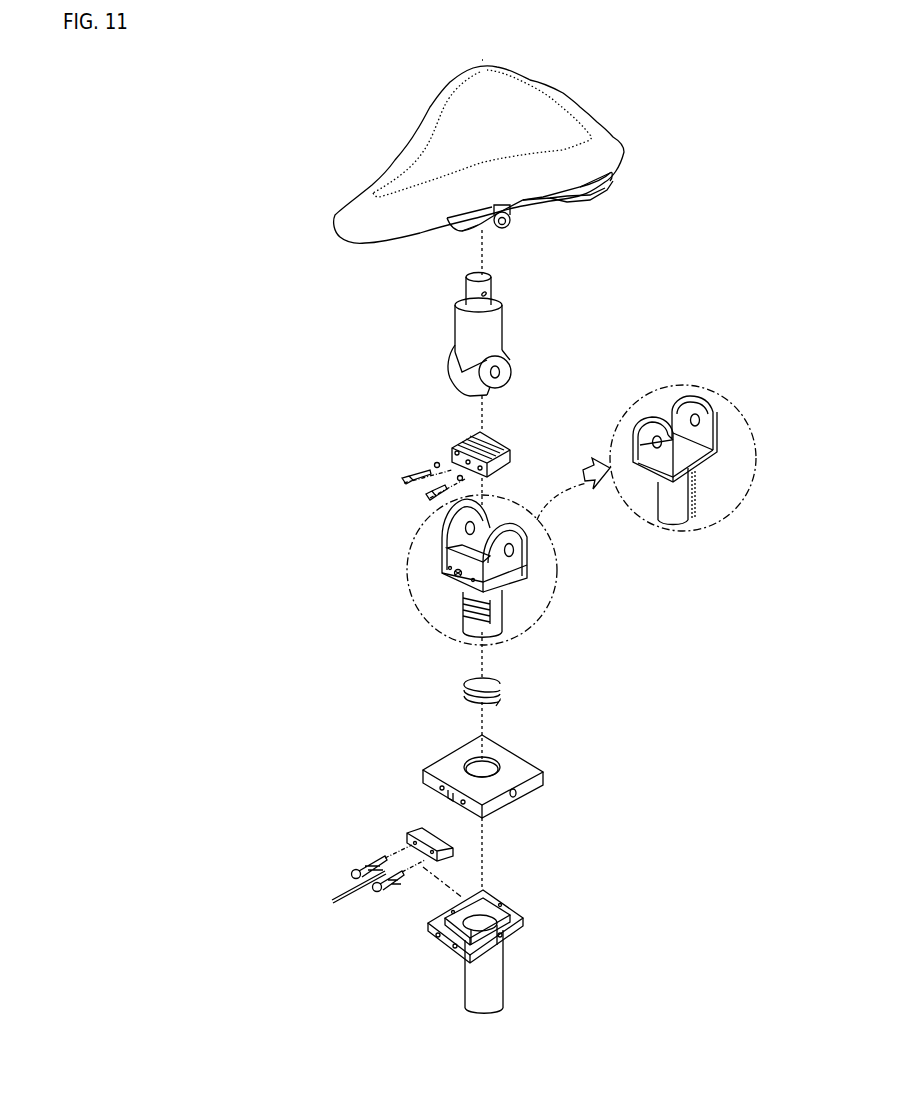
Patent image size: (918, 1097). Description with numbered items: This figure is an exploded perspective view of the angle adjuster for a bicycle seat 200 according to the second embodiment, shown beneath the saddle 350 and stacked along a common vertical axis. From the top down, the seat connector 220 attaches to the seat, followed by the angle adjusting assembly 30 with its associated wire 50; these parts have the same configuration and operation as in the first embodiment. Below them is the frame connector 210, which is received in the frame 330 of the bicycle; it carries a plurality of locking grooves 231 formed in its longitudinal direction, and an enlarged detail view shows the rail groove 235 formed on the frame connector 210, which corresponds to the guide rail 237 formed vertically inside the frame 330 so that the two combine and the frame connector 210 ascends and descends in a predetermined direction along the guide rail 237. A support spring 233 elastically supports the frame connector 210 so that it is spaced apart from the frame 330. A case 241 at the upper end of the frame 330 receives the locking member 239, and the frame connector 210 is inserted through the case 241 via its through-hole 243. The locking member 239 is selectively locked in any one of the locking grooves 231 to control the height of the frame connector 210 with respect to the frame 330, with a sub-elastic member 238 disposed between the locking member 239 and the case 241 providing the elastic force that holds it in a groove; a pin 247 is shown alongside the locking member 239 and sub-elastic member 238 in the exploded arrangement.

The angle adjuster for a bicycle seat 200 is at (262, 311).
The saddle 350 is at (542, 110).
The seat connector 220 is at (497, 330).
The angle adjusting assembly 30 is at (505, 442).
The wire 50 is at (420, 497).
The frame connector 210 is at (498, 605).
The locking grooves 231 is at (465, 612).
The rail groove 235 is at (693, 497).
The support spring 233 is at (502, 683).
The case 241 is at (520, 800).
The hole 243 is at (475, 767).
The locking member 239 is at (418, 830).
The sub-elastic member 238 is at (362, 866).
The pin 247 is at (347, 898).
The guide rail 237 is at (500, 936).
The frame 330 is at (473, 983).